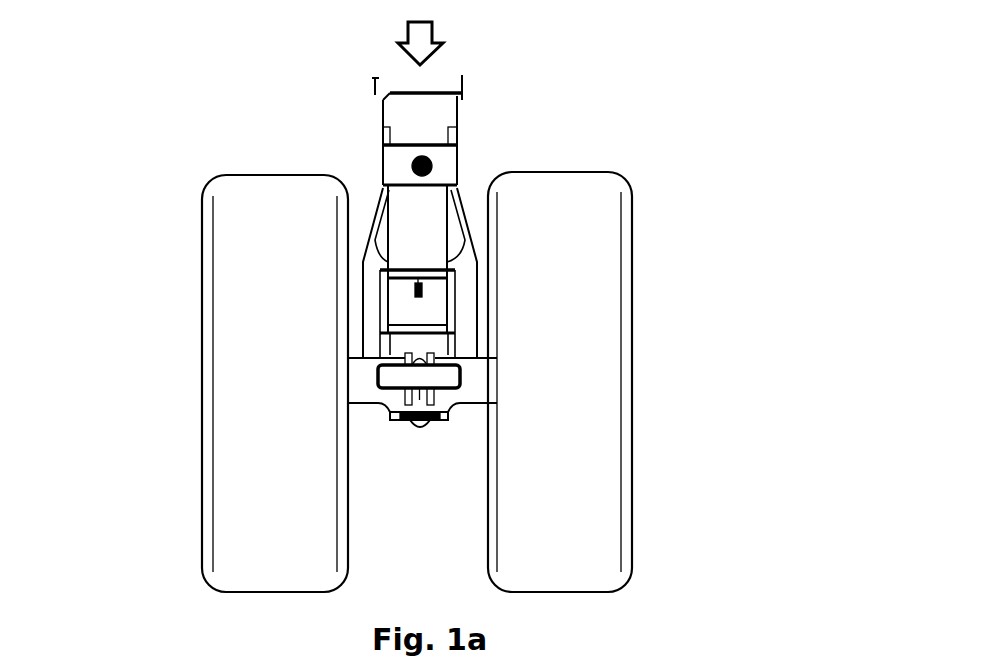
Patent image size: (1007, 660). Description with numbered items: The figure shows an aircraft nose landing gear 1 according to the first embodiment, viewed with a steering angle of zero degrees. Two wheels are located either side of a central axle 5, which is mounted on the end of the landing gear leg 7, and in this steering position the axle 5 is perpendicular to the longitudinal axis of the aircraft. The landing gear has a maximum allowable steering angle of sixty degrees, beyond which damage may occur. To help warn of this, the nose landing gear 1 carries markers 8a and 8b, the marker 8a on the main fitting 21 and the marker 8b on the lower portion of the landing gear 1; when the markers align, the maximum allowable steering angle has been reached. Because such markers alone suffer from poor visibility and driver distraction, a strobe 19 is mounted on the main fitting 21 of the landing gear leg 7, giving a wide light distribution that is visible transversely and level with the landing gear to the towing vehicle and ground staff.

The nose landing gear 1 is at (172, 381).
The central axle 5 is at (464, 405).
The landing gear leg 7 is at (358, 168).
The marker 8a is at (447, 135).
The marker 8b is at (422, 292).
The strobe 19 is at (413, 160).
The main fitting 21 is at (432, 160).